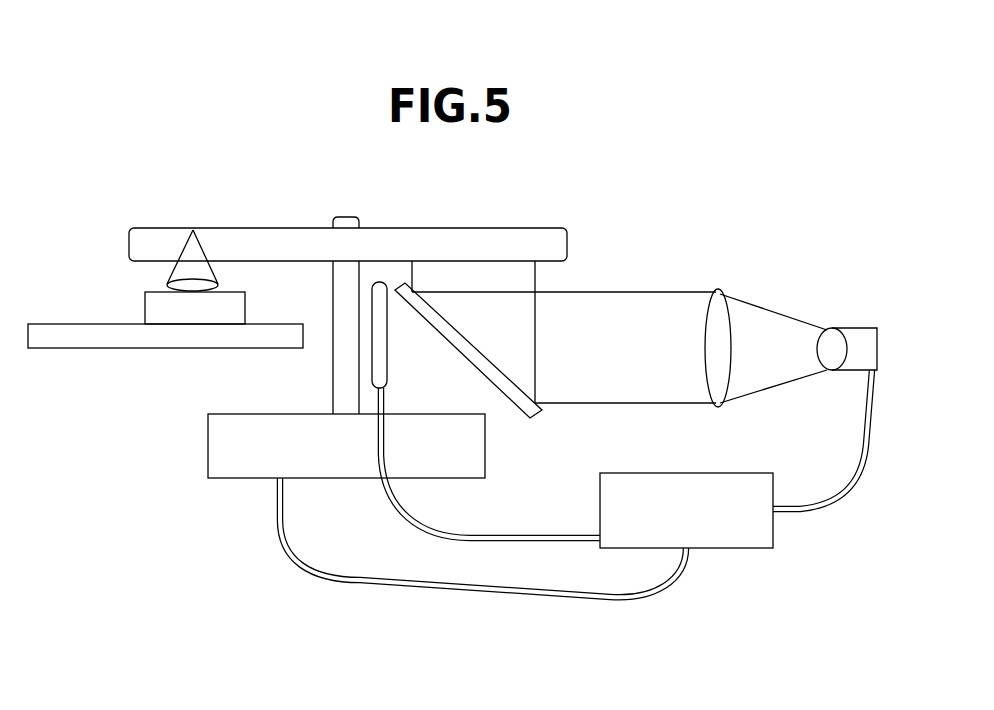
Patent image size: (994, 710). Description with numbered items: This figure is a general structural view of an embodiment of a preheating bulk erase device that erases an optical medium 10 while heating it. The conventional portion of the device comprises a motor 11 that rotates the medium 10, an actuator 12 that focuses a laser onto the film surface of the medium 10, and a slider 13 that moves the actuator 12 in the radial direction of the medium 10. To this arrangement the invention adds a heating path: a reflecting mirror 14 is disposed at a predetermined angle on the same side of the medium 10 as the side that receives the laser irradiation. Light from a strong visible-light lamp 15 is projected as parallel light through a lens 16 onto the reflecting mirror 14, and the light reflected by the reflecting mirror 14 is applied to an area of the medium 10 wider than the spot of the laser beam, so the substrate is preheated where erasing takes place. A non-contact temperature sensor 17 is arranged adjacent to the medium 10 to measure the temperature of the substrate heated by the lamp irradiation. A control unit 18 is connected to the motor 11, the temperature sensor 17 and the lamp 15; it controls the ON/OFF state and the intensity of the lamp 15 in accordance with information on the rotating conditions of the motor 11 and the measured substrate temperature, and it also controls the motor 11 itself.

The medium 10 is at (568, 243).
The motor 11 is at (216, 448).
The actuator 12 is at (147, 307).
The slider 13 is at (113, 341).
The reflecting mirror 14 is at (535, 417).
The strong visible-light lamp 15 is at (855, 335).
The lens 16 is at (717, 291).
The non-contact temperature sensor 17 is at (388, 372).
The control unit 18 is at (735, 541).